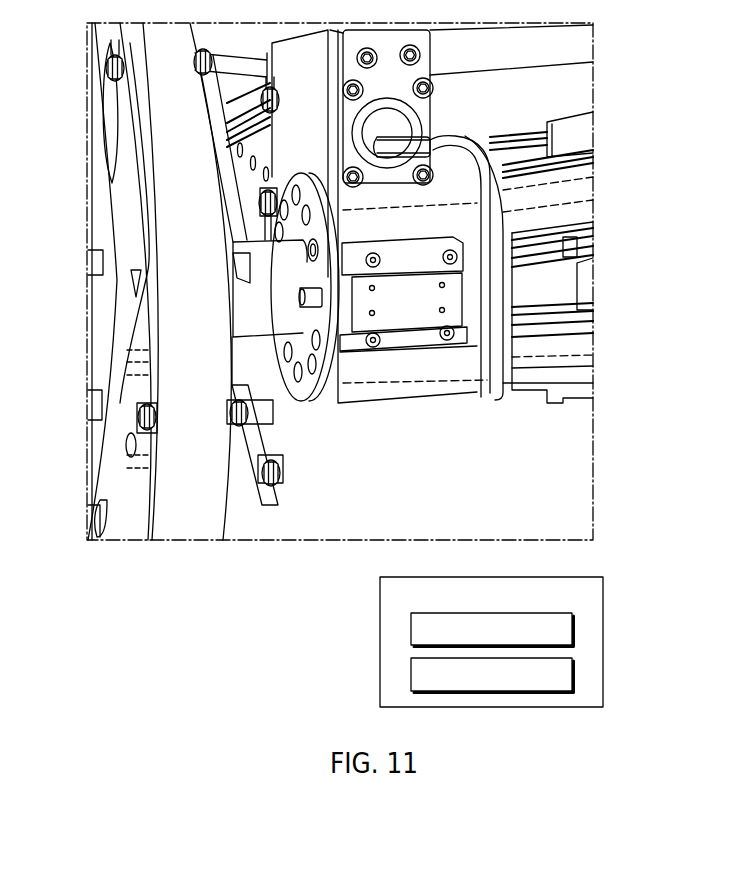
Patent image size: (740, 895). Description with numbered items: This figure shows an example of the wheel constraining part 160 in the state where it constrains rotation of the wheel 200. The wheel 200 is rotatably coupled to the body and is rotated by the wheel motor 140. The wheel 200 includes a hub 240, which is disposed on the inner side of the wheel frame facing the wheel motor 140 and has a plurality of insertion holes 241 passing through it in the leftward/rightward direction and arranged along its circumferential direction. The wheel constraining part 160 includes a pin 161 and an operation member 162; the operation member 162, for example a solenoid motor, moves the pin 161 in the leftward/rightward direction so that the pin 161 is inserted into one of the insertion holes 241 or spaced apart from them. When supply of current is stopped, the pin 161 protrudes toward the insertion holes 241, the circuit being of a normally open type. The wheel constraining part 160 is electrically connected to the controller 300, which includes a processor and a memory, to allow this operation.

The wheel motor 140 is at (420, 388).
The wheel constraining part 160 is at (395, 379).
The pin 161 is at (310, 306).
The operation member 162 is at (397, 313).
The wheel 200 is at (203, 509).
The hub 240 is at (313, 275).
The insertion holes 241 is at (313, 252).
The controller 300 is at (450, 296).